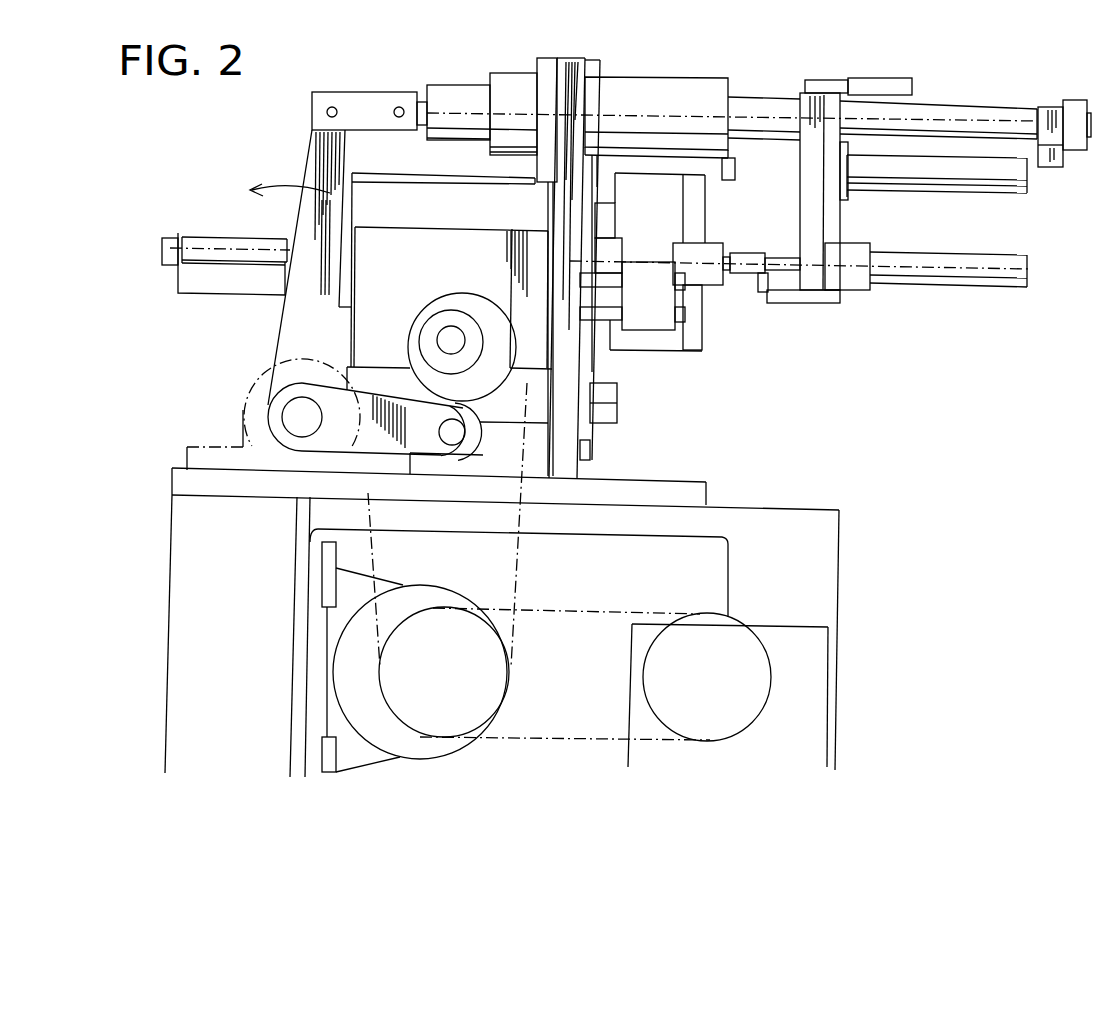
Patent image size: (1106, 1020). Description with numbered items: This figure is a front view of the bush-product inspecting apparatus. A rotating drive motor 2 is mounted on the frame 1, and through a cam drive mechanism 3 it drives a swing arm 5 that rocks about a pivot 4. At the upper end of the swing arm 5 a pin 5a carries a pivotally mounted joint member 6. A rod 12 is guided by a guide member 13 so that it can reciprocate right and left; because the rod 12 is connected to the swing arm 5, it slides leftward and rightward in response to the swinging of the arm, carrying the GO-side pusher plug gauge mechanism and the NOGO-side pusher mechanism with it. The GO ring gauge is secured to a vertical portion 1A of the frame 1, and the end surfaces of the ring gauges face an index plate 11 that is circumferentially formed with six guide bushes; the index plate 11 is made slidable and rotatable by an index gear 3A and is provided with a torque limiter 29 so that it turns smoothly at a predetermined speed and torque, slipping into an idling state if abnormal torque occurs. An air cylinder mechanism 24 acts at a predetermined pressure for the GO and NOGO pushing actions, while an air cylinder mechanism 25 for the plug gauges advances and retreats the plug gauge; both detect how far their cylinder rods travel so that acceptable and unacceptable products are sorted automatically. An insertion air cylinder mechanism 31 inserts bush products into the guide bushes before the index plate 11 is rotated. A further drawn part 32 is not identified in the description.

The frame 1 is at (178, 478).
The vertical portion of the frame 1A is at (575, 60).
The rotating drive motor 2 is at (458, 740).
The cam drive mechanism 3 is at (430, 310).
The index gear 3A is at (492, 243).
The pivot 4 is at (290, 416).
The swing arm 5 is at (343, 153).
The pin 5a is at (328, 112).
The joint member 6 is at (352, 95).
The index plate 11 is at (592, 440).
The rod 12 is at (766, 100).
The guide member 13 is at (702, 90).
The air cylinder mechanism 24 is at (928, 178).
The air cylinder mechanism for the plug gauges 25 is at (976, 112).
The torque limiter 29 is at (700, 305).
The insertion air cylinder mechanism 31 is at (924, 278).
The rod 32 is at (226, 237).